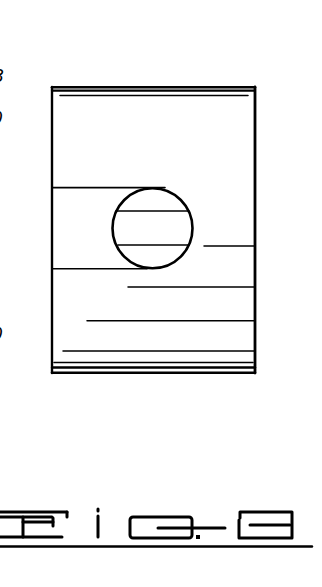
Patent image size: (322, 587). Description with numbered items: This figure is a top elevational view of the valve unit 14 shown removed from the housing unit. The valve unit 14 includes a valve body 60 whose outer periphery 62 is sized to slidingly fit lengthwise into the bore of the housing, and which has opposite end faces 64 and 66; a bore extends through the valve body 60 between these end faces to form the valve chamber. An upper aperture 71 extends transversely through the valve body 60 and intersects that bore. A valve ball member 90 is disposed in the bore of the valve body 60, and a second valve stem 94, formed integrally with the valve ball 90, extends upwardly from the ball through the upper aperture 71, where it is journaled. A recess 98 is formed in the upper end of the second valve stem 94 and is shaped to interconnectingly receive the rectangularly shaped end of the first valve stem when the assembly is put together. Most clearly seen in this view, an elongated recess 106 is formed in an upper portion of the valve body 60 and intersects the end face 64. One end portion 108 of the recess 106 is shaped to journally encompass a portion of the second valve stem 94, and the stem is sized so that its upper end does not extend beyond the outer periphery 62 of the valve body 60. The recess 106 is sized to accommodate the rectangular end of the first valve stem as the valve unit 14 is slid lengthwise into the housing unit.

The valve unit 14 is at (116, 82).
The outer periphery 62 is at (193, 86).
The end face 66 is at (256, 125).
The end face 64 is at (51, 158).
The valve body 60 is at (211, 355).
The elongated recess 106 is at (92, 190).
The second valve stem 94 is at (165, 196).
The recess 98 is at (176, 212).
The end portion 108 is at (181, 237).
The valve ball member 90 is at (63, 251).
The upper aperture 71 is at (130, 257).